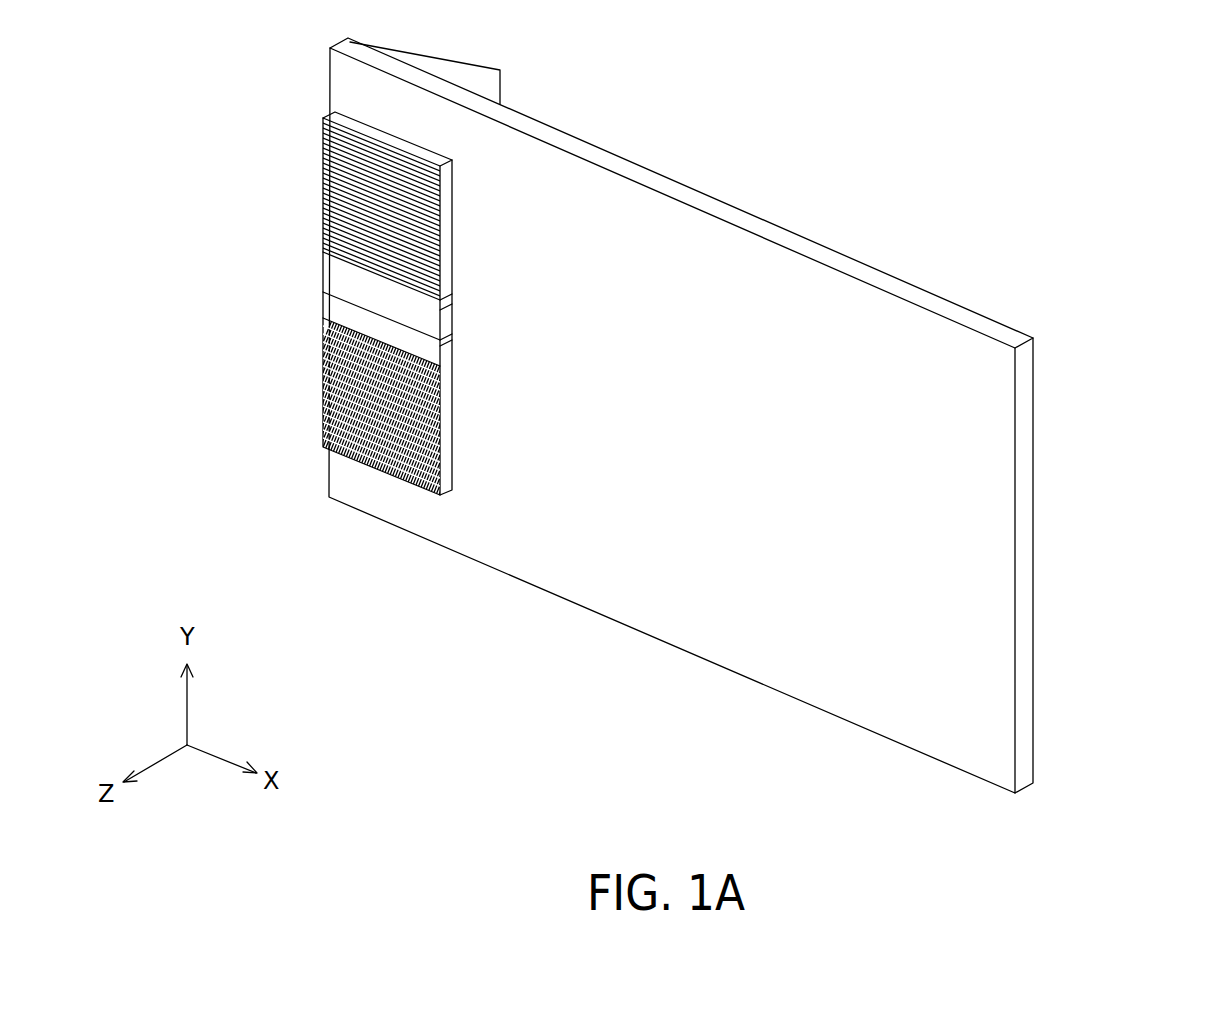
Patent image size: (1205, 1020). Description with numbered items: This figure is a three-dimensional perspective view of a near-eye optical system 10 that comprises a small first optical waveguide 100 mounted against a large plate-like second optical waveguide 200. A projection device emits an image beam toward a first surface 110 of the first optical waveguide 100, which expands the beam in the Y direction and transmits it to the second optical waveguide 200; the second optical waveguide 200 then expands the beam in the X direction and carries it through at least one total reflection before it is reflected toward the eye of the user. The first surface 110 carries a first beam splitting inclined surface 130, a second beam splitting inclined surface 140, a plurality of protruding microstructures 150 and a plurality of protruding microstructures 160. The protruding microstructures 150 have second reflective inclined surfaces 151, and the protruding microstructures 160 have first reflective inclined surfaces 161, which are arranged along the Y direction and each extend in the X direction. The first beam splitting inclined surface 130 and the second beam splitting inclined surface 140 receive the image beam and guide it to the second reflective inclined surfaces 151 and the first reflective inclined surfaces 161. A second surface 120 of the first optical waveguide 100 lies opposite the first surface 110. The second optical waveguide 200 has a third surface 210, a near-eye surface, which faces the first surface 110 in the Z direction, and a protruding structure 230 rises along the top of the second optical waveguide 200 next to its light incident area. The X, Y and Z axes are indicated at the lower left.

The near-eye optical system 10 is at (945, 128).
The first optical waveguide 100 is at (375, 287).
The first surface 110 is at (346, 281).
The second surface 120 is at (455, 217).
The first beam splitting inclined surface 130 is at (456, 310).
The second beam splitting inclined surface 140 is at (455, 341).
The protruding microstructures 150 is at (323, 257).
The second reflective inclined surfaces 151 is at (322, 242).
The protruding microstructures 160 is at (323, 308).
The first reflective inclined surfaces 161 is at (322, 322).
The second optical waveguide 200 is at (1029, 413).
The third surface 210 is at (953, 438).
The protruding structure 230 is at (484, 78).